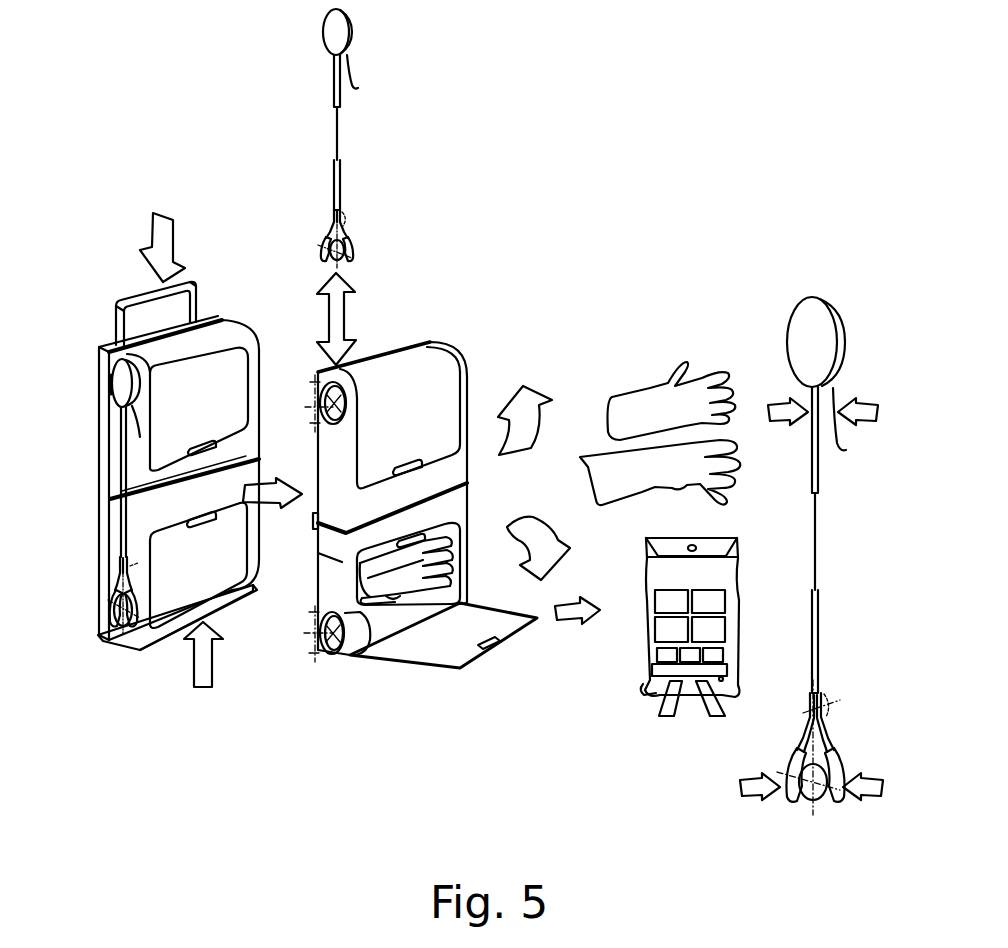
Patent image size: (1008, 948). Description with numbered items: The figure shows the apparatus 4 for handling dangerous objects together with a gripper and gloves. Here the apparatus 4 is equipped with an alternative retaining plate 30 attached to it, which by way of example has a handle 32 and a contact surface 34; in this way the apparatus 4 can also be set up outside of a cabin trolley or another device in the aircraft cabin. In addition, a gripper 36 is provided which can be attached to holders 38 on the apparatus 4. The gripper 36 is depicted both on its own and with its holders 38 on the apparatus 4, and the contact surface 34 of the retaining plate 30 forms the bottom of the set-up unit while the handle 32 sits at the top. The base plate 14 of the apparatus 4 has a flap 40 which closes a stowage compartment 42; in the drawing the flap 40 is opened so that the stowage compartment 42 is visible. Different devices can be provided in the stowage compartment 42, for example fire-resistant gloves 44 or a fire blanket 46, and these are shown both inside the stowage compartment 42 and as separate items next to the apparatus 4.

The apparatus 4 is at (245, 318).
The base plate 14 is at (448, 490).
The retaining plate 30 is at (102, 445).
The handle 32 is at (130, 291).
The contact surface 34 is at (127, 652).
The gripper 36 is at (333, 132).
The holders 38 is at (337, 395).
The flap 40 is at (450, 658).
The stowage compartment 42 is at (393, 597).
The fire-resistant gloves 44 is at (445, 565).
The fire blanket 46 is at (440, 597).